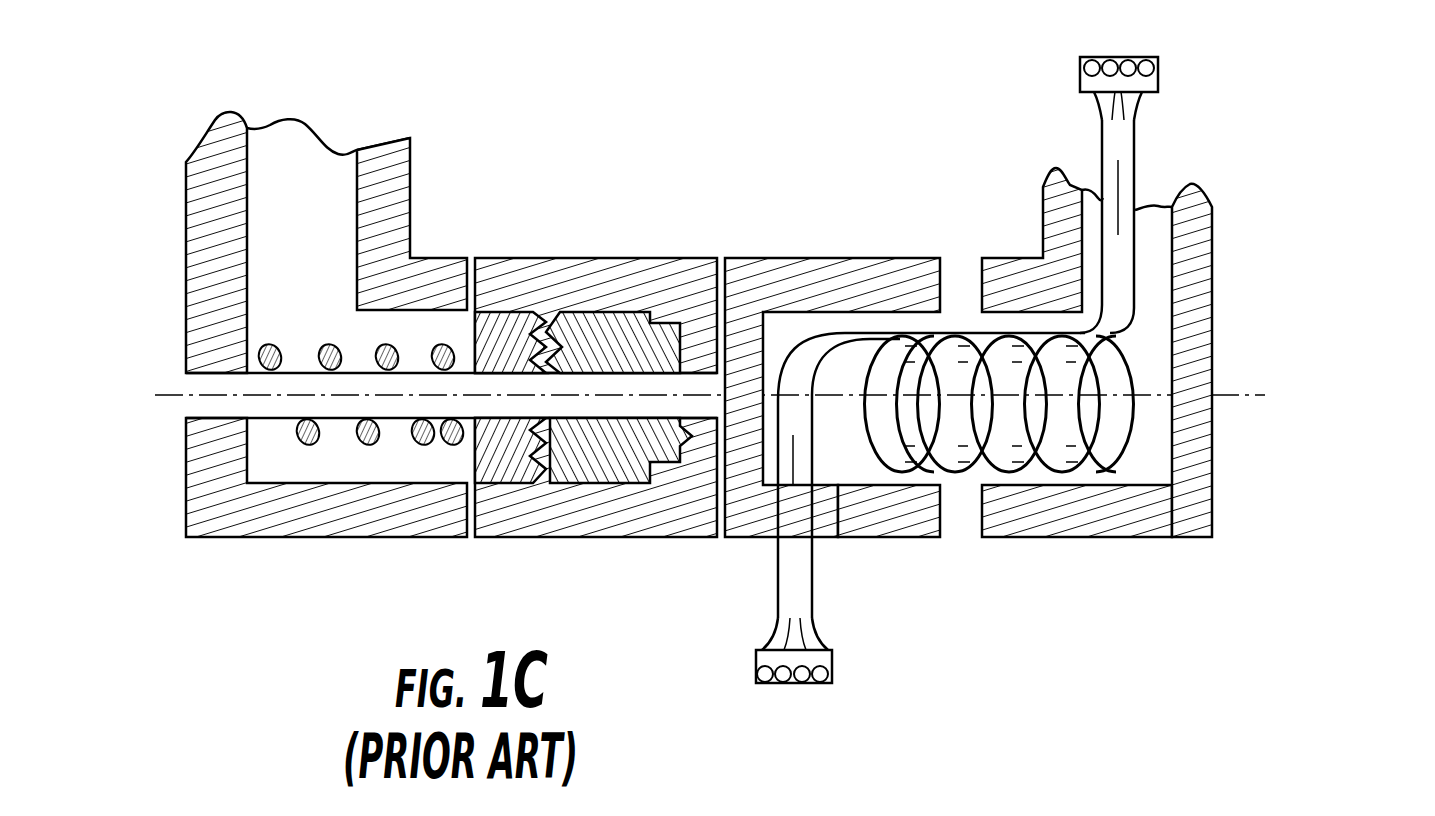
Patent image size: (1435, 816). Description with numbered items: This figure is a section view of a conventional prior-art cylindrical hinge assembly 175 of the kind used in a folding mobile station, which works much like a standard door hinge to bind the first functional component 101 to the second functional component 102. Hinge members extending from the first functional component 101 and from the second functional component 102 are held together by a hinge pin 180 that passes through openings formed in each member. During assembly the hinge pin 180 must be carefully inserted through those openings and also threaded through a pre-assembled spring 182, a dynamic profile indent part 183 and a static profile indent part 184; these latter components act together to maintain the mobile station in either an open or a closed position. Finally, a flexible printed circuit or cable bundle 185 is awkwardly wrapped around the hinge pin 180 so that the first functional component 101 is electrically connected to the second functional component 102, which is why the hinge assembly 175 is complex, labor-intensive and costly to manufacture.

The first functional component 101 is at (885, 520).
The second functional component 102 is at (1193, 296).
The cylindrical hinge assembly 175 is at (752, 370).
The hinge pin 180 is at (212, 410).
The pre-assembled spring 182 is at (263, 348).
The profile indent part (dynamic) 183 is at (503, 322).
The profile indent part (static) 184 is at (612, 322).
The flexible printed circuit or cable bundle 185 is at (788, 558).